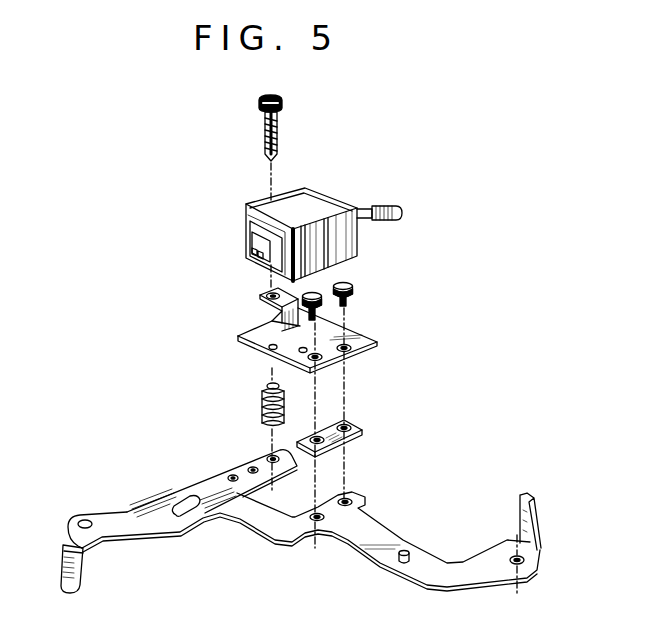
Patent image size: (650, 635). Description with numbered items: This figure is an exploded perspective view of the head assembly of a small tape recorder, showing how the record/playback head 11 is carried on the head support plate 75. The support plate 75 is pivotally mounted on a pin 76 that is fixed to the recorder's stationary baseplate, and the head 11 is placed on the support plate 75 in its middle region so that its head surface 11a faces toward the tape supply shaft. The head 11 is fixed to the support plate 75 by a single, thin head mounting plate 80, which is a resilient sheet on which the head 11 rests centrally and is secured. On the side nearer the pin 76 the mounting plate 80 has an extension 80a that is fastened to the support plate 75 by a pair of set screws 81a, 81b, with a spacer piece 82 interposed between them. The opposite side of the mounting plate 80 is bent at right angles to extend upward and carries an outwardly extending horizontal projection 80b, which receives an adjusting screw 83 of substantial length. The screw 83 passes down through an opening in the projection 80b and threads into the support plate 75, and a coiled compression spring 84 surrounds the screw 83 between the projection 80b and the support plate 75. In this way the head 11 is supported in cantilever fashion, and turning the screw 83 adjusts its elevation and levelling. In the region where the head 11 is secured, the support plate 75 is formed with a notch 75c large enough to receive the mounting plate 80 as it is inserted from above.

The record/playback head 11 is at (313, 197).
The head surface 11a is at (258, 238).
The head support plate 75 is at (301, 522).
The notch 75c is at (286, 502).
The pin 76 is at (512, 553).
The head mounting plate 80 is at (321, 322).
The extension 80a is at (373, 342).
The horizontal projection 80b is at (263, 290).
The set screw 81a is at (319, 289).
The set screw 81b is at (349, 295).
The spacer piece 82 is at (353, 432).
The adjusting screw 83 is at (276, 116).
The coiled compression spring 84 is at (262, 412).